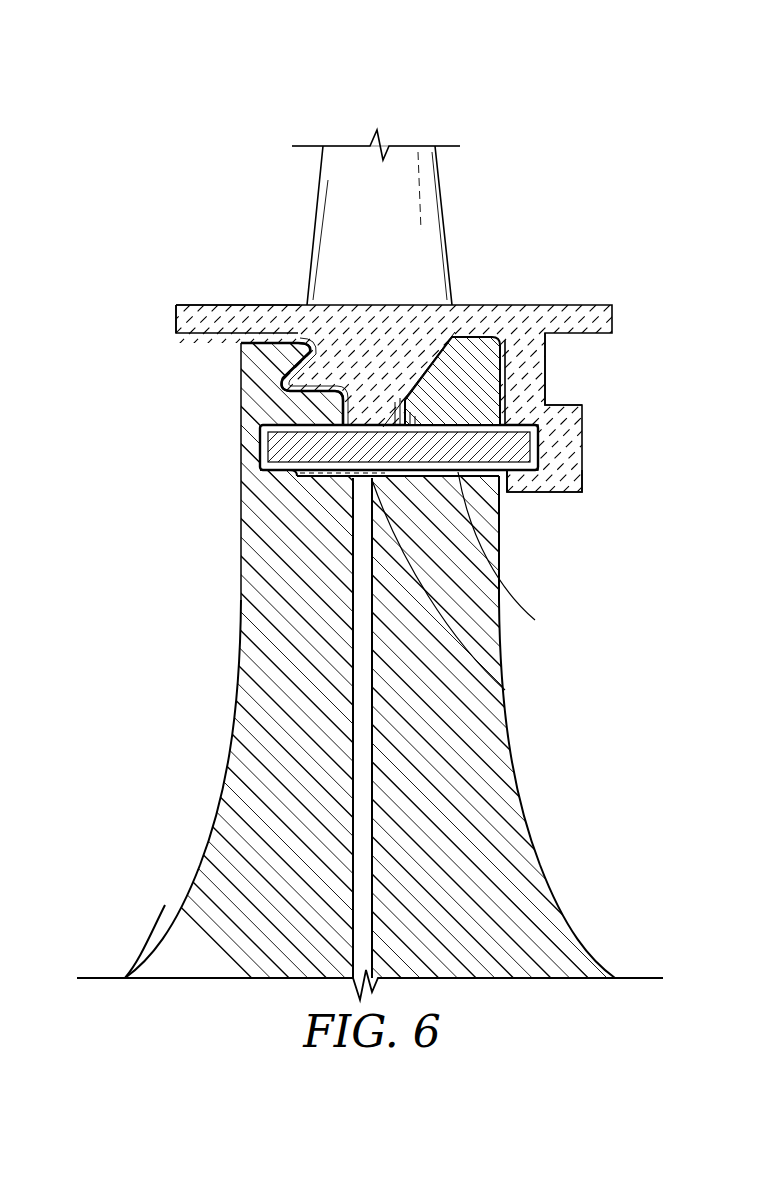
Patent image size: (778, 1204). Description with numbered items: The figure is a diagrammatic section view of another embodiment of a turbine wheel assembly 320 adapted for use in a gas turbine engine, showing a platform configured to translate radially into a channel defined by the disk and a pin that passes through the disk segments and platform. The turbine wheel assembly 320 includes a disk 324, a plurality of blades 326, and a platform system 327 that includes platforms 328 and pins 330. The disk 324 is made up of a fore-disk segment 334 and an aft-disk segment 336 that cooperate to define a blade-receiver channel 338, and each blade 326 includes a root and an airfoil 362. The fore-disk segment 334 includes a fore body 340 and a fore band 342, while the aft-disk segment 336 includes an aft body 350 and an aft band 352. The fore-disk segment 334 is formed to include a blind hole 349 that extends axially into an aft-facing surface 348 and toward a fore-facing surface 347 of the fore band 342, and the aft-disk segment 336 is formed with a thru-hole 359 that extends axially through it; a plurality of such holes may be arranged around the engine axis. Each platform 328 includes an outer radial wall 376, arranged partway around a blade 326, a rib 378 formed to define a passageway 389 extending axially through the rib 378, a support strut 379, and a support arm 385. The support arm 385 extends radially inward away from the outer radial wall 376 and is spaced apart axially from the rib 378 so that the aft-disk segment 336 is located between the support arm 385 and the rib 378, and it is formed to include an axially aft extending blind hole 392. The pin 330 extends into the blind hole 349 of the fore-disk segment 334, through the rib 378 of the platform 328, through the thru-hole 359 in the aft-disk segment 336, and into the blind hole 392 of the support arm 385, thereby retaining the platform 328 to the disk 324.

The turbine wheel assembly 320 is at (600, 108).
The disk 324 is at (200, 773).
The blade 326 is at (442, 172).
The platform system 327 is at (160, 300).
The platform 328 is at (215, 285).
The pin 330 is at (478, 480).
The fore-disk segment 334 is at (150, 907).
The aft-disk segment 336 is at (600, 930).
The blade-receiver channel 338 is at (360, 482).
The fore body 340 is at (192, 815).
The fore band 342 is at (290, 330).
The fore-facing surface 347 is at (240, 355).
The aft-facing surface 348 is at (293, 358).
The blind hole 349 is at (267, 470).
The aft body 350 is at (565, 880).
The aft band 352 is at (480, 335).
The thru-hole 359 is at (535, 620).
The airfoil 362 is at (422, 230).
The outer radial wall 376 is at (622, 318).
The rib 378 is at (333, 408).
The support strut 379 is at (292, 398).
The support arm 385 is at (550, 375).
The passageway 389 is at (505, 690).
The blind hole 392 is at (527, 478).